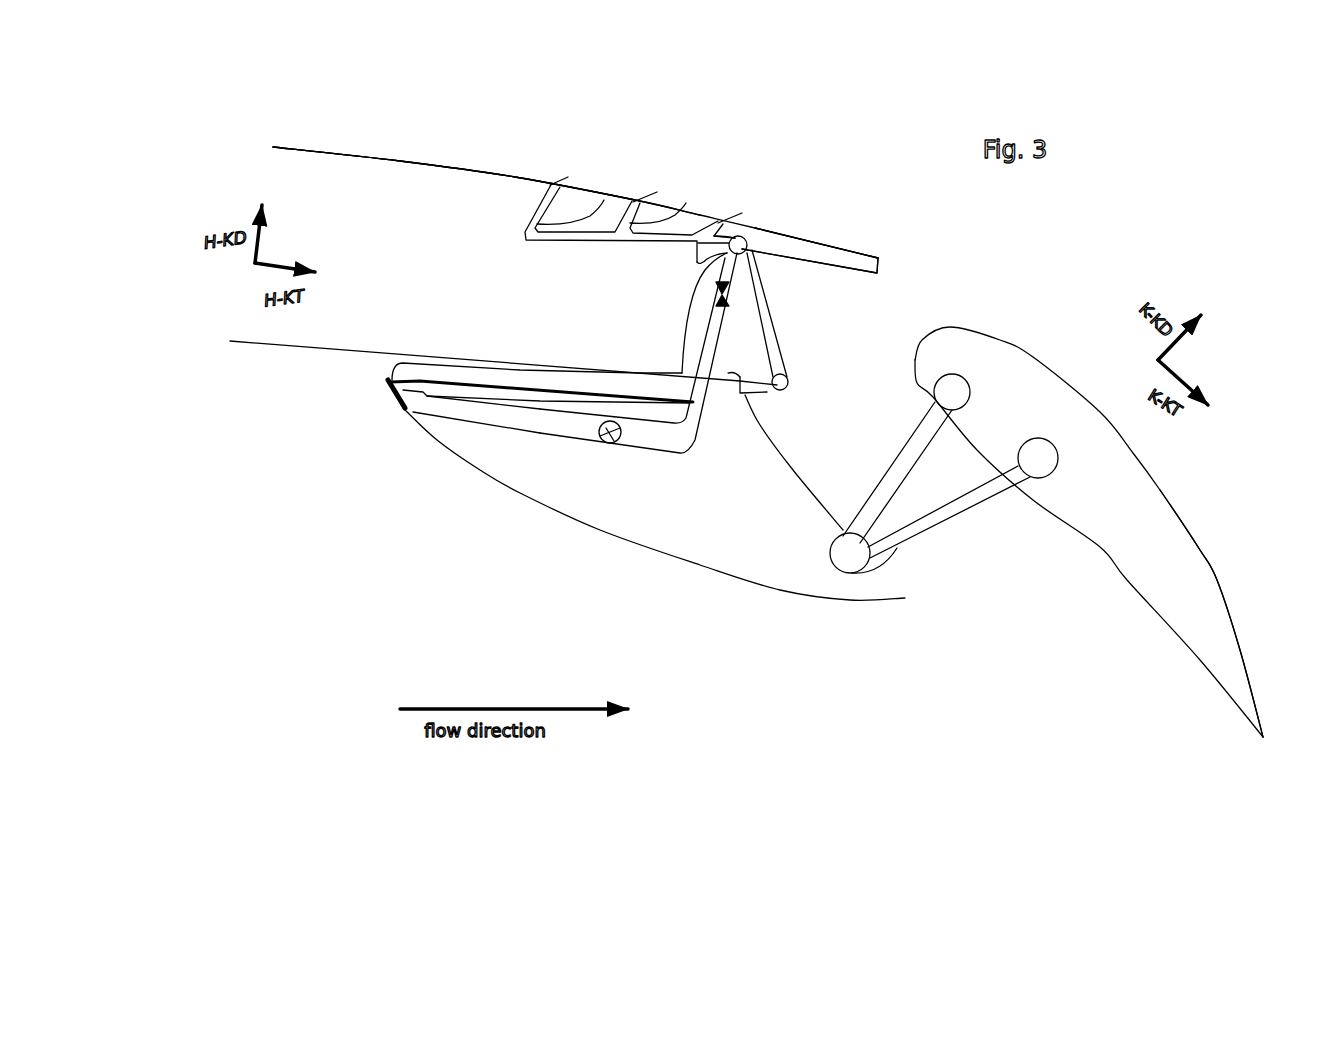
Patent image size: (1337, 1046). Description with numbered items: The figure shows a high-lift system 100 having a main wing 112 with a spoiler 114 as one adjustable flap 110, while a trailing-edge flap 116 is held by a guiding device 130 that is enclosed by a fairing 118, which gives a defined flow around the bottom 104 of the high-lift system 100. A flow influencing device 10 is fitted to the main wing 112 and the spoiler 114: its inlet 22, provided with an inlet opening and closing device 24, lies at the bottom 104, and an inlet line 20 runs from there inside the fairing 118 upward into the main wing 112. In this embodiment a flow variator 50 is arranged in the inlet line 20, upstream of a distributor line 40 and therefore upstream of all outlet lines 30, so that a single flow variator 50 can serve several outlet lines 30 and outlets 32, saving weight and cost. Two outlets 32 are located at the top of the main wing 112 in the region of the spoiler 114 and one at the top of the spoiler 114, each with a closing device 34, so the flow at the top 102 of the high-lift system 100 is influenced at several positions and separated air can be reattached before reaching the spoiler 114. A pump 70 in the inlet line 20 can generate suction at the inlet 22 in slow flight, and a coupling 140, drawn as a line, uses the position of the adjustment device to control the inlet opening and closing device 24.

The high-lift system 100 is at (775, 133).
The top 102 is at (507, 168).
The bottom 104 is at (401, 508).
The adjustable flap 110 is at (770, 238).
The main wing 112 is at (365, 168).
The spoiler 114 is at (825, 254).
The trailing-edge flap 116 is at (1127, 513).
The fairing 118 is at (638, 540).
The guiding device 130 is at (855, 570).
The coupling 140 is at (760, 400).
The flow influencing device 10 is at (595, 462).
The inlet line 20 is at (692, 420).
The inlet 22 is at (400, 408).
The inlet opening and closing device 24 is at (383, 396).
The outlet line 30 is at (615, 237).
The outlet 32 is at (765, 215).
The closing device 34 is at (557, 173).
The distributor line 40 is at (695, 258).
The flow variator 50 is at (728, 300).
The pump 70 is at (608, 443).